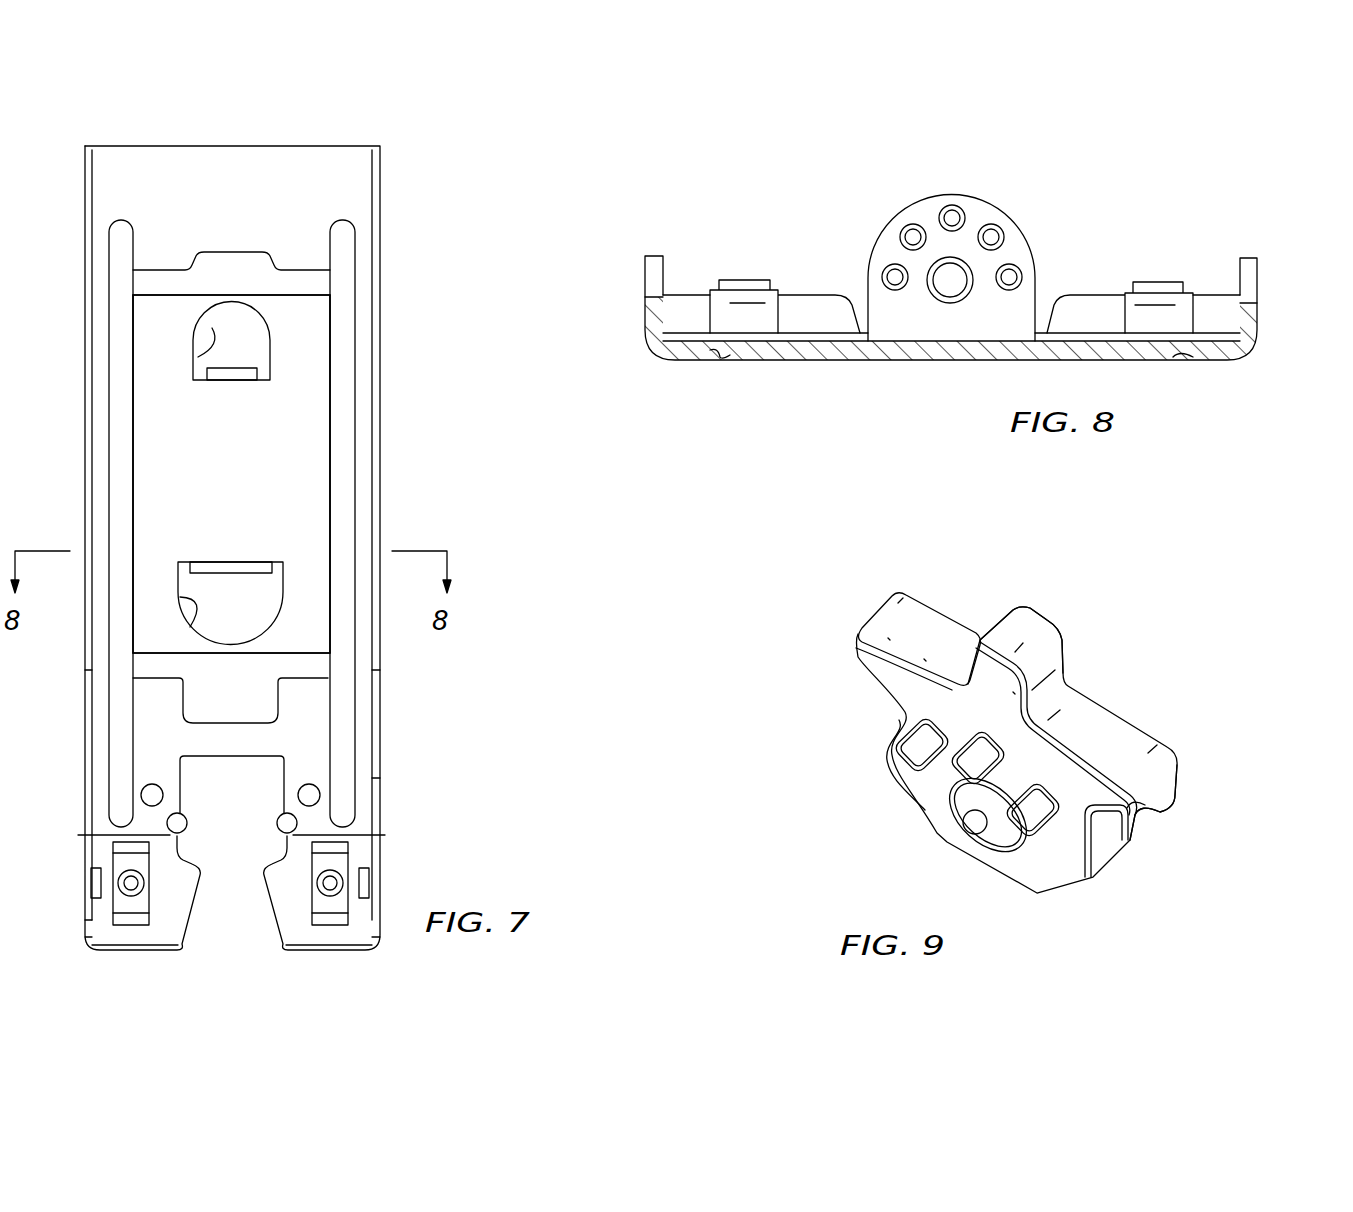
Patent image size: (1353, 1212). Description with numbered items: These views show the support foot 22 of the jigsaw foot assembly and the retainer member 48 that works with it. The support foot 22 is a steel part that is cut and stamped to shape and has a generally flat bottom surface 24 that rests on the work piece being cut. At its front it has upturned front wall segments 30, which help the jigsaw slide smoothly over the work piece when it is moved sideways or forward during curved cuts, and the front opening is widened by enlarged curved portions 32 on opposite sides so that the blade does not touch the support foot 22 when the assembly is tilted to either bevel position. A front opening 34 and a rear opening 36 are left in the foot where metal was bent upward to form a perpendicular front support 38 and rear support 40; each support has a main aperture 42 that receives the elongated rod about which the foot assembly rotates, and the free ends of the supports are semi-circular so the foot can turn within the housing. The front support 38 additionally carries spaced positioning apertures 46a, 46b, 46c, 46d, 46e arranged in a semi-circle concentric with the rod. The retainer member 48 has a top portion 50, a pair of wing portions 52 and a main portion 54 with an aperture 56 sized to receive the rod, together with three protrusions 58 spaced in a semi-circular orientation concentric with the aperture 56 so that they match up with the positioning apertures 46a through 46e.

In FIG. 7, the support foot 22 is at (385, 482).
In FIG. 8, the support foot 22 is at (1260, 280).
In FIG. 7, the bottom surface 24 is at (283, 447).
In FIG. 8, the bottom surface 24 is at (818, 362).
In FIG. 7, the front wall segments 30 is at (241, 842).
In FIG. 7, the enlarged curved portions 32 is at (233, 836).
In FIG. 7, the front opening 34 is at (190, 622).
In FIG. 7, the rear opening 36 is at (212, 328).
In FIG. 7, the front support 38 is at (230, 570).
In FIG. 8, the front support 38 is at (915, 197).
In FIG. 7, the rear support 40 is at (235, 370).
In FIG. 8, the main aperture 42 is at (950, 283).
In FIG. 8, the positioning aperture 46a is at (1012, 276).
In FIG. 8, the positioning aperture 46b is at (998, 232).
In FIG. 8, the positioning aperture 46c is at (955, 212).
In FIG. 8, the positioning aperture 46d is at (907, 230).
In FIG. 8, the positioning aperture 46e is at (889, 273).
In FIG. 9, the retainer member 48 is at (1068, 686).
In FIG. 9, the top portion 50 is at (1012, 627).
In FIG. 9, the wing portions 52 is at (868, 652).
In FIG. 9, the main portion 54 is at (1057, 868).
In FIG. 9, the aperture 56 is at (985, 822).
In FIG. 9, the protrusions 58 is at (962, 772).